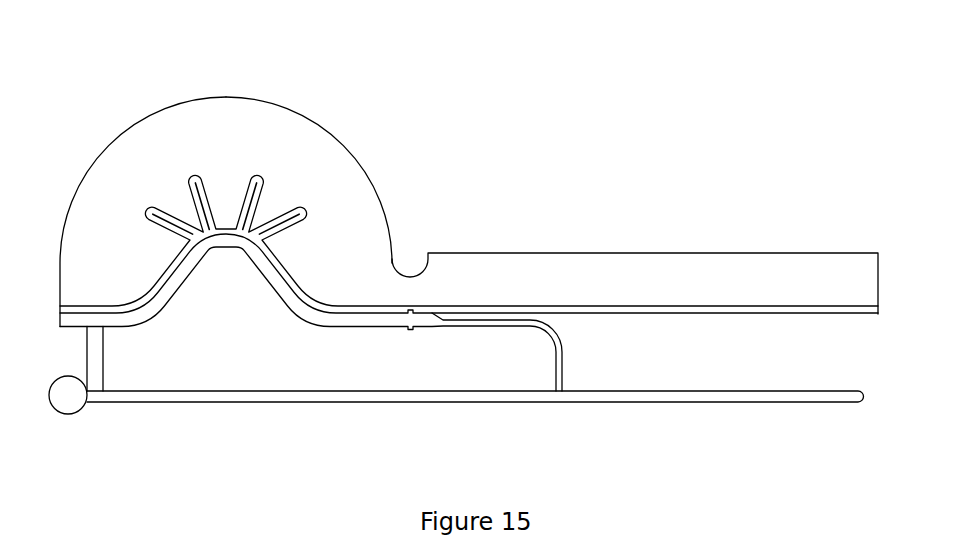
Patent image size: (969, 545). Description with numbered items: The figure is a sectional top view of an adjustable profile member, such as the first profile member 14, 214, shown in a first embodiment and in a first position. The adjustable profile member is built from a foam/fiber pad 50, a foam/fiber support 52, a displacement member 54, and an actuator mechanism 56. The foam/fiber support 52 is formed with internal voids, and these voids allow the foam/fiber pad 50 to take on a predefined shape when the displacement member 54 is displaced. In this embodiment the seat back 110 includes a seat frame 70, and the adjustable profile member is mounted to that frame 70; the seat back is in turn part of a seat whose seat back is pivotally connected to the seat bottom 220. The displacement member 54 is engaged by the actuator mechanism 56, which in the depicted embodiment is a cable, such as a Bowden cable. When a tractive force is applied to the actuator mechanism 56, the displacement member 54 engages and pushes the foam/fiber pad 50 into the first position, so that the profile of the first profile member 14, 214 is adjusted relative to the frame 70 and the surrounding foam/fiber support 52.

The first profile member 14 is at (342, 86).
The first profile member 214 is at (469, 182).
The foam/fiber pad 50 is at (196, 113).
The foam/fiber support 52 is at (350, 175).
The seat back 110 is at (570, 162).
The seat bottom 220 is at (635, 199).
The displacement member 54 is at (296, 300).
The actuator mechanism 56 is at (563, 371).
The seat frame 70 is at (145, 436).